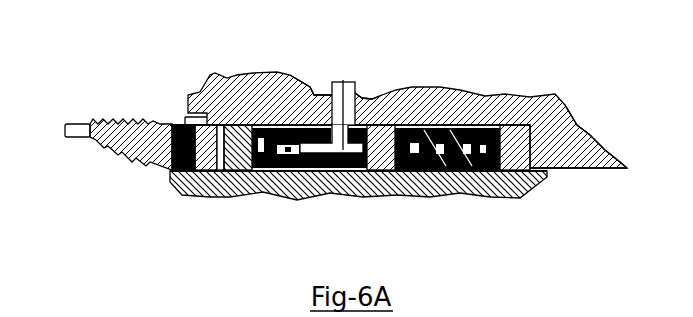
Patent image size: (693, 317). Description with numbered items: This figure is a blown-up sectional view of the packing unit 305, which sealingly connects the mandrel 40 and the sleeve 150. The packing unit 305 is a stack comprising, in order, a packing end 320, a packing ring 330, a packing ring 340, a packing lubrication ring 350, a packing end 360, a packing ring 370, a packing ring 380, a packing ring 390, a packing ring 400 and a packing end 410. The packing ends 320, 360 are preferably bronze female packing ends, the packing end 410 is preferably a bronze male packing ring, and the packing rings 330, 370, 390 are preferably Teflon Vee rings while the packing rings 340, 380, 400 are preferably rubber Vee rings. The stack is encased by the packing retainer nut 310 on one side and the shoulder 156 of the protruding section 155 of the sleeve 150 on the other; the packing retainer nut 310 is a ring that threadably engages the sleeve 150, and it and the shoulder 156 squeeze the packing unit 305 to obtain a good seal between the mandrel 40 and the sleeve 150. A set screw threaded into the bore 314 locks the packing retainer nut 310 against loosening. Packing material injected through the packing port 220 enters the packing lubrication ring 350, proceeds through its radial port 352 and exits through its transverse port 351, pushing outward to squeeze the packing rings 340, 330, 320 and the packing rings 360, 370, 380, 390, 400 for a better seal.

The packing unit 305 is at (526, 43).
The sleeve 150 is at (440, 88).
The protruding section 155 is at (598, 128).
The shoulder 156 is at (553, 171).
The transverse port 351 is at (366, 95).
The radial port 352 is at (313, 105).
The packing port 220 is at (346, 82).
The packing retainer nut 310 is at (114, 118).
The bore 314 is at (164, 171).
The mandrel 40 is at (178, 195).
The packing end 320 is at (226, 195).
The packing ring 330 is at (258, 197).
The packing ring 340 is at (293, 197).
The packing lubrication ring 350 is at (323, 199).
The packing end 360 is at (375, 194).
The packing ring 370 is at (397, 198).
The packing ring 380 is at (436, 194).
The packing ring 390 is at (452, 198).
The packing ring 400 is at (490, 194).
The packing end 410 is at (508, 198).